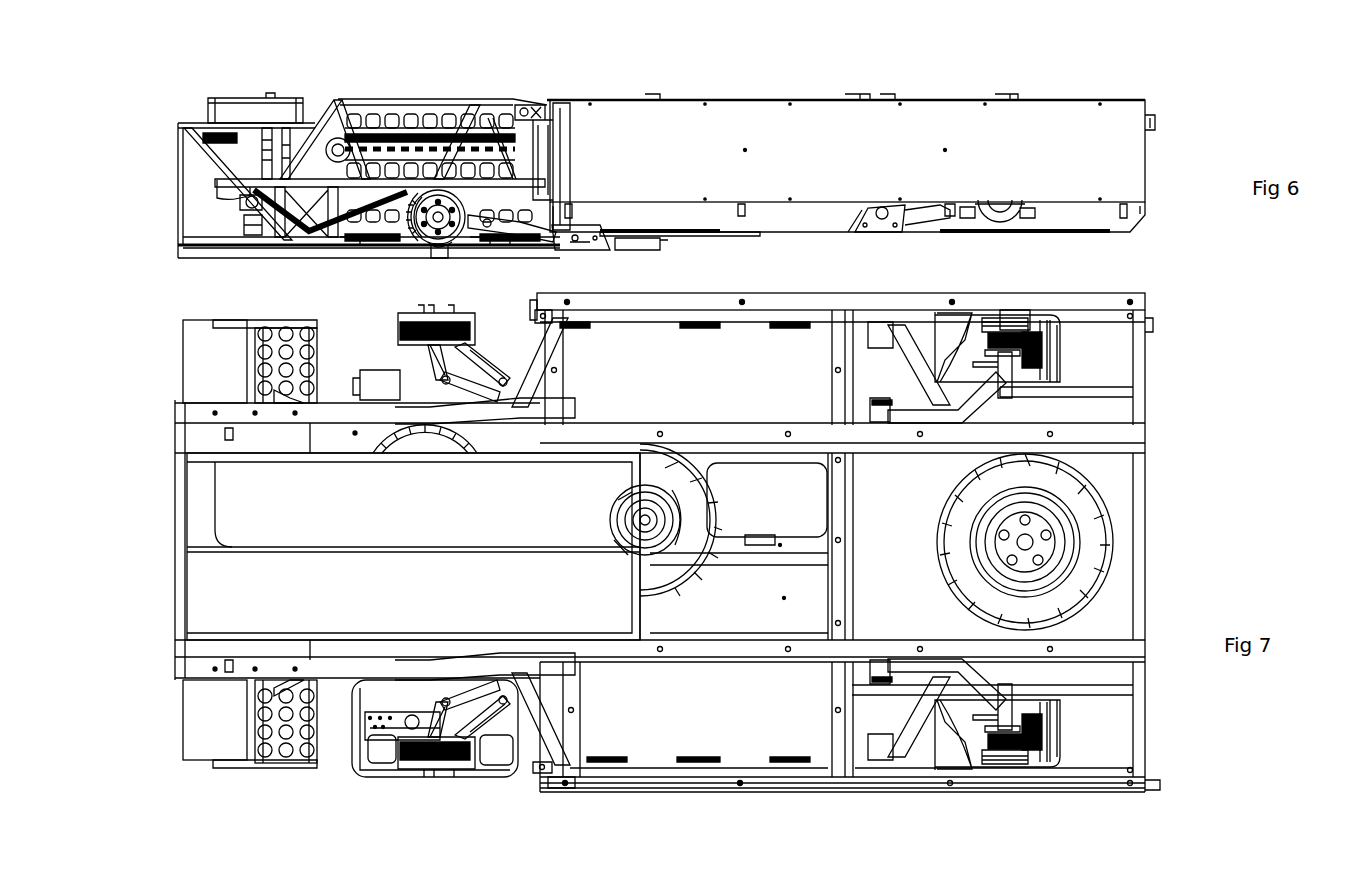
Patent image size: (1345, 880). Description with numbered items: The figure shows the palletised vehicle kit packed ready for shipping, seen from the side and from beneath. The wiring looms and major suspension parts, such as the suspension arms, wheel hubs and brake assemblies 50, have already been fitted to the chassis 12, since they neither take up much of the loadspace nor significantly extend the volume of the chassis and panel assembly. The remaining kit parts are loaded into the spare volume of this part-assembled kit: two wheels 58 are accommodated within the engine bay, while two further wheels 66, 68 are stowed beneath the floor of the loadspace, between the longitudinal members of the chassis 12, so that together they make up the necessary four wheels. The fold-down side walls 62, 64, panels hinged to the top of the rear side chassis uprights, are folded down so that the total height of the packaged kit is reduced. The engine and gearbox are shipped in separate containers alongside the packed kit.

In FIG. 6, the chassis 12 is at (195, 123).
In FIG. 7, the chassis 12 is at (1080, 447).
In FIG. 6, the brake assemblies 50 is at (427, 262).
In FIG. 7, the brake assemblies 50 is at (430, 312).
In FIG. 6, the wheels 58 is at (425, 100).
In FIG. 6, the fold-down side wall 62 is at (1095, 140).
In FIG. 7, the fold-down side wall 62 is at (1083, 293).
In FIG. 7, the fold-down side wall 64 is at (1077, 792).
In FIG. 6, the wheel 66 is at (700, 235).
In FIG. 7, the wheel 66 is at (688, 580).
In FIG. 6, the wheel 68 is at (950, 218).
In FIG. 7, the wheel 68 is at (960, 565).